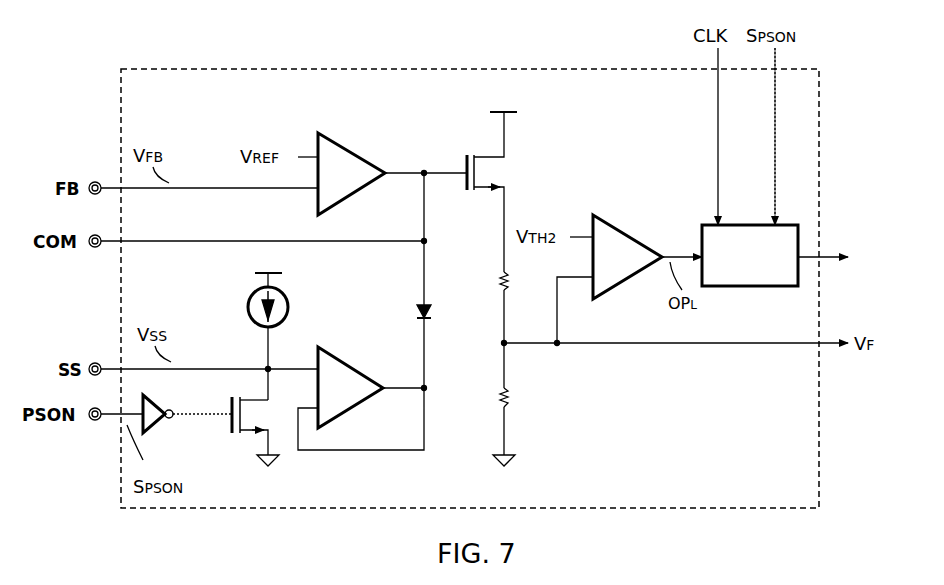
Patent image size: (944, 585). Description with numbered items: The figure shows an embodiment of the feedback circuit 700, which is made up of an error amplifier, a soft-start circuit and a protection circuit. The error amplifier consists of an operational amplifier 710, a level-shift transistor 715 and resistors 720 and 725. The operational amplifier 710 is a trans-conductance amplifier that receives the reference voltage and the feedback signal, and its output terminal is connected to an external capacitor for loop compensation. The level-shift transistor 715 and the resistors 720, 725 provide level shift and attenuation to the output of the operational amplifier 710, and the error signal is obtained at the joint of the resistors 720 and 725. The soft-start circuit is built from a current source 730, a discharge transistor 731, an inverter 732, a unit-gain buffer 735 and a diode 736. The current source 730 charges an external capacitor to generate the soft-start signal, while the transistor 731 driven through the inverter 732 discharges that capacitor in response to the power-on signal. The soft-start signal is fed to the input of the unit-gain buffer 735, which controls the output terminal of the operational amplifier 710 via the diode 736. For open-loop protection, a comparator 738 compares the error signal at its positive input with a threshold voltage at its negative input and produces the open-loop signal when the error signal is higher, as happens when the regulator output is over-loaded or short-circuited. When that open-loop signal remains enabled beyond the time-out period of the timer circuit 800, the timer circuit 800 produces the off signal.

The feedback circuit 700 is at (820, 95).
The operational amplifier 710 is at (374, 127).
The level-shift transistor 715 is at (503, 172).
The resistor 720 is at (492, 283).
The resistor 725 is at (492, 396).
The current source 730 is at (240, 302).
The discharge transistor 731 is at (250, 436).
The inverter 732 is at (160, 432).
The unit-gain buffer 735 is at (355, 356).
The diode 736 is at (412, 310).
The comparator 738 is at (647, 209).
The timer circuit 800 is at (742, 288).